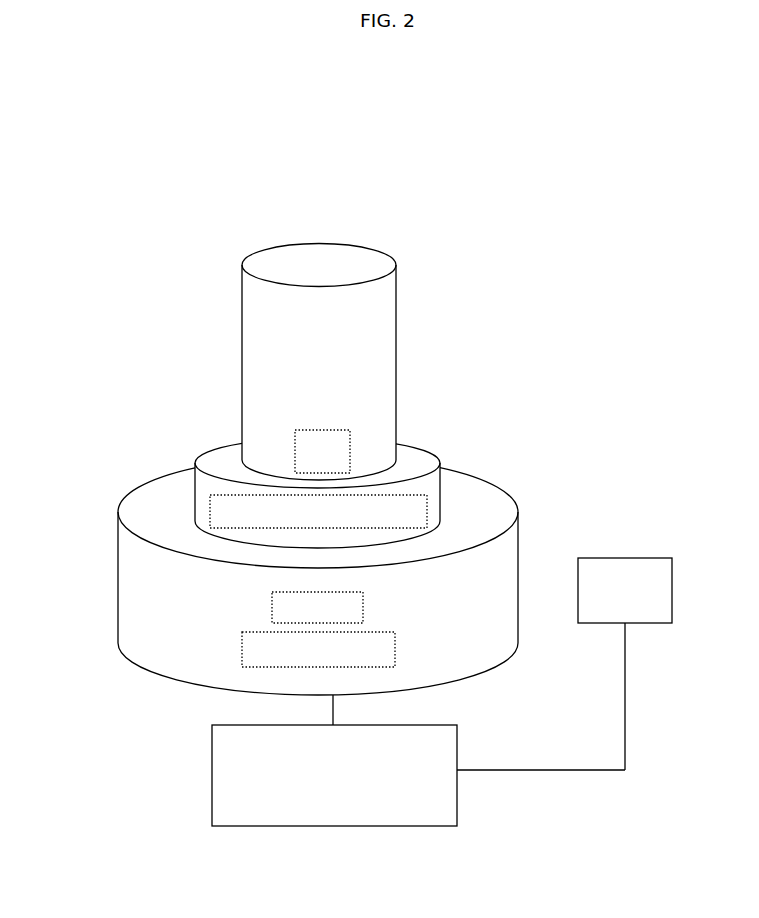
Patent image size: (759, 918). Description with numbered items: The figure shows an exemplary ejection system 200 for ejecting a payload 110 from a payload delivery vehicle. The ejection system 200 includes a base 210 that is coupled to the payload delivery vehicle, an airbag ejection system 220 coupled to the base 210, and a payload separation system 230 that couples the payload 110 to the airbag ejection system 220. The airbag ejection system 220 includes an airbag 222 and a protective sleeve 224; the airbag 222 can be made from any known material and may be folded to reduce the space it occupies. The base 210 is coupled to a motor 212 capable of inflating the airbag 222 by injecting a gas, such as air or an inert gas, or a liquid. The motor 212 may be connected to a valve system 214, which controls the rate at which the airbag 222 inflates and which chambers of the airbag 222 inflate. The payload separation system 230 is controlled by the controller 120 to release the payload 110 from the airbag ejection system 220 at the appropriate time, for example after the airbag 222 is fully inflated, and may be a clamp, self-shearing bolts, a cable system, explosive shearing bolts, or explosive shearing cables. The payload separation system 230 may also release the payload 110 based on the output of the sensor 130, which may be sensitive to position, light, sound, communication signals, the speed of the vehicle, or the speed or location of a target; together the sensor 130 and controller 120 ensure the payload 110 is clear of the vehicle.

The ejection system 200 is at (672, 181).
The payload 110 is at (397, 371).
The controller 120 is at (458, 750).
The sensor 130 is at (673, 607).
The base 210 is at (291, 581).
The motor 212 is at (395, 657).
The valve system 214 is at (272, 615).
The airbag ejection system 220 is at (338, 475).
The airbag 222 is at (212, 508).
The protective sleeve 224 is at (430, 452).
The payload separation system 230 is at (318, 431).